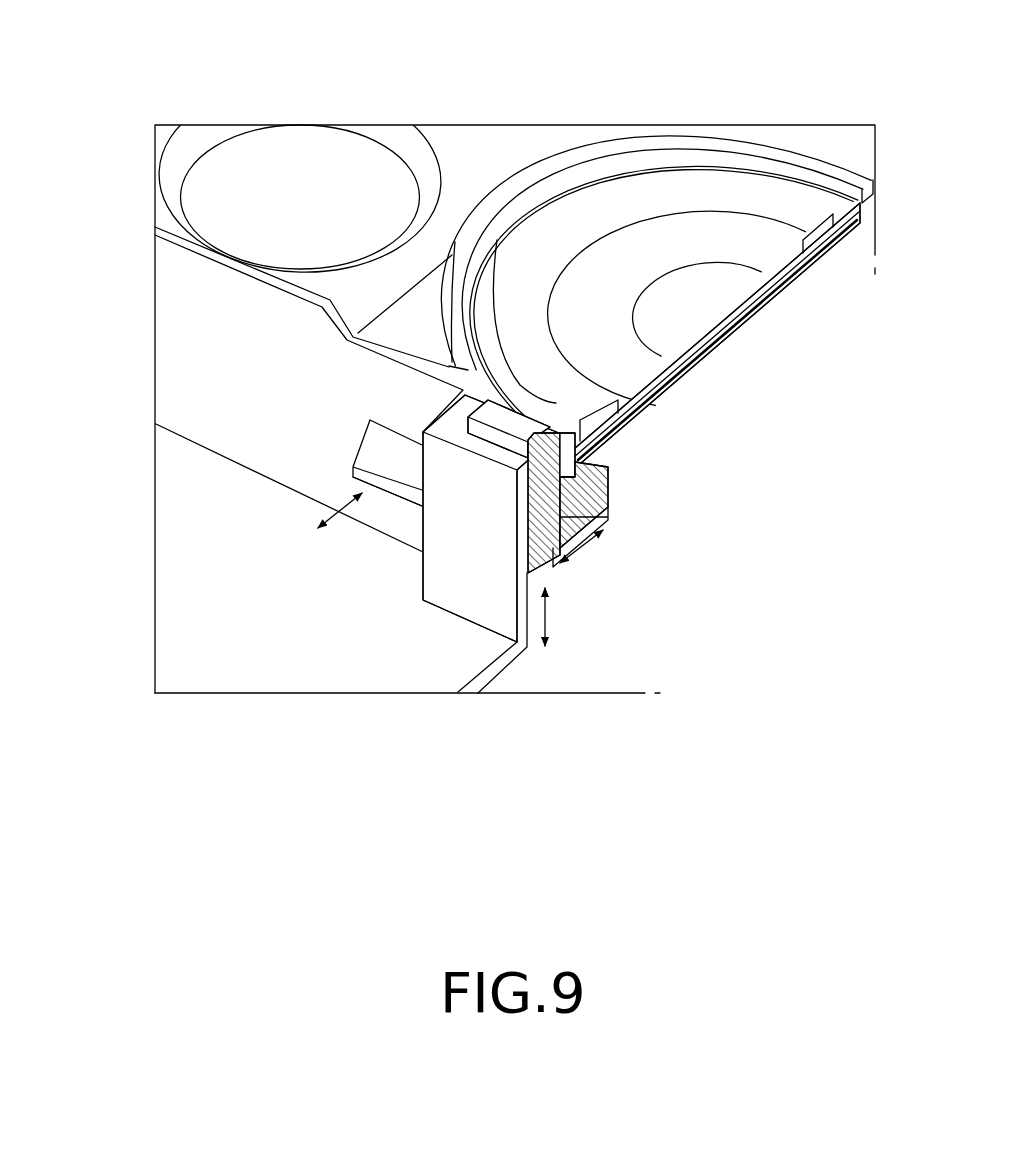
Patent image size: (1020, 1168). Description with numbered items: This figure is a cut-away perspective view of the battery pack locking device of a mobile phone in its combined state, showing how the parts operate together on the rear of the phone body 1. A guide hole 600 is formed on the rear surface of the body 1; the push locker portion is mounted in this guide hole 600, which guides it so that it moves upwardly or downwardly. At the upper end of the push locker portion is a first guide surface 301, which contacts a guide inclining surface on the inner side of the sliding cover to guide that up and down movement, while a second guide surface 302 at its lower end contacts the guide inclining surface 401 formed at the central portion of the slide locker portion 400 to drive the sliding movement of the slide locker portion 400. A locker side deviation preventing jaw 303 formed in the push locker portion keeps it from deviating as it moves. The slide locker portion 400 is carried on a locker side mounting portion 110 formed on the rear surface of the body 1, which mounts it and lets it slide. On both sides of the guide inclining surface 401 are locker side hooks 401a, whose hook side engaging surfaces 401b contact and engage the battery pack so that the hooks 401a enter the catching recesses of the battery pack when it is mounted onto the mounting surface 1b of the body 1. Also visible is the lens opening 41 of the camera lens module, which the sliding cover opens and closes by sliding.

The phone body 1 is at (489, 148).
The mounting surface 1b is at (255, 672).
The lens opening 41 is at (702, 296).
The locker side mounting portion 110 is at (363, 447).
The first guide surface 301 is at (513, 423).
The second guide surface 302 is at (549, 572).
The locker side deviation preventing jaw 303 is at (566, 470).
The slide locker portion 400 is at (613, 480).
The guide inclining surface 401 is at (560, 512).
The locker side hooks 401a is at (403, 497).
The hook side engaging surfaces 401b is at (377, 458).
The guide hole 600 is at (500, 450).